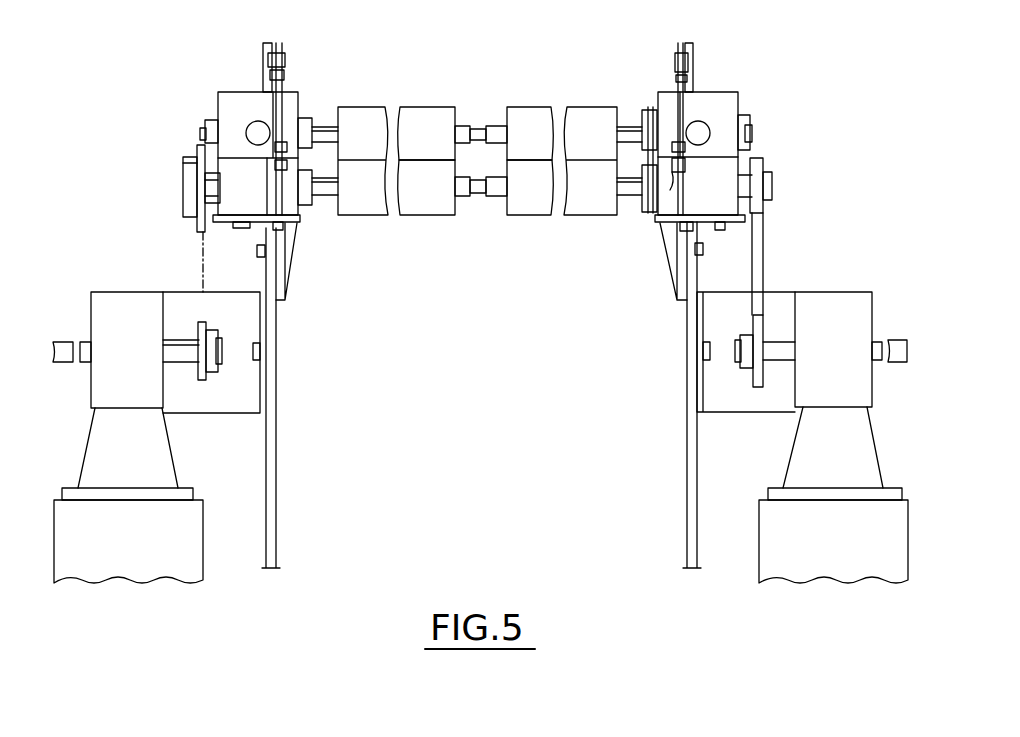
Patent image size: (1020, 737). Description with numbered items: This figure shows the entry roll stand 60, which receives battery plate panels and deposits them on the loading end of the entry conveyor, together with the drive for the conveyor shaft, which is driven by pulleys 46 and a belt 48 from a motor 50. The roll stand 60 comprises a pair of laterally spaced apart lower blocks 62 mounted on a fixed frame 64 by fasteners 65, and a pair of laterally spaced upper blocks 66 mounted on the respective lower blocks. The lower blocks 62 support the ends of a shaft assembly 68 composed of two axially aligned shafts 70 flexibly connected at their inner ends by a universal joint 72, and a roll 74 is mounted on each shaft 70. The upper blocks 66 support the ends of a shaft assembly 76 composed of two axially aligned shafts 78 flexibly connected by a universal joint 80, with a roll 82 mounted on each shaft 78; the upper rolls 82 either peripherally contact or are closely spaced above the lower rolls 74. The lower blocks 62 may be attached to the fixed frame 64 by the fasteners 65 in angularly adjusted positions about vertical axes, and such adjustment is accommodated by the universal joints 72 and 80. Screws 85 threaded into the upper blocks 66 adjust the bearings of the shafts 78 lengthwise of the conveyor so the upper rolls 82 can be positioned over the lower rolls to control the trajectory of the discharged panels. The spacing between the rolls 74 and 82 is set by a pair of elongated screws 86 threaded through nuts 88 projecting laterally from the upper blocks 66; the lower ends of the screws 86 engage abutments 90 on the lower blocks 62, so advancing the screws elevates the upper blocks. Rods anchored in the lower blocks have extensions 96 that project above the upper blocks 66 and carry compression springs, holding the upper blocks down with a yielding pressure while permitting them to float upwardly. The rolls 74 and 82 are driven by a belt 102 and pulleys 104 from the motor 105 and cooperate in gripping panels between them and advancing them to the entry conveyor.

The pulleys 46 is at (765, 208).
The belt 48 is at (768, 262).
The motor 50 is at (830, 300).
The entry roll stand 60 is at (756, 77).
The lower blocks 62 is at (215, 185).
The fixed frame 64 is at (292, 225).
The fasteners 65 is at (252, 228).
The upper blocks 66 is at (235, 92).
The shaft assembly 68 is at (331, 203).
The shafts 70 is at (322, 205).
The universal joint 72 is at (480, 196).
The roll 74 is at (425, 215).
The shaft assembly 76 is at (306, 117).
The shafts 78 is at (332, 110).
The universal joint 80 is at (478, 125).
The roll 82 is at (415, 110).
The screws 85 is at (250, 125).
The elongated screws 86 is at (285, 95).
The nuts 88 is at (287, 150).
The abutments 90 is at (278, 165).
The extensions 96 is at (278, 50).
The belt 102 is at (200, 244).
The pulleys 104 is at (205, 375).
The motor 105 is at (120, 300).